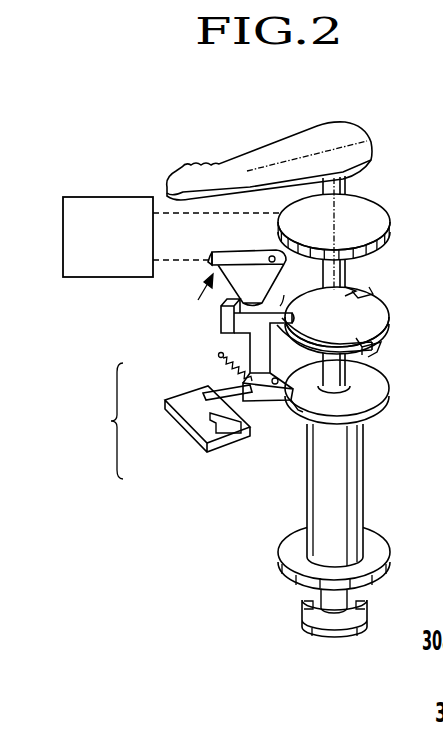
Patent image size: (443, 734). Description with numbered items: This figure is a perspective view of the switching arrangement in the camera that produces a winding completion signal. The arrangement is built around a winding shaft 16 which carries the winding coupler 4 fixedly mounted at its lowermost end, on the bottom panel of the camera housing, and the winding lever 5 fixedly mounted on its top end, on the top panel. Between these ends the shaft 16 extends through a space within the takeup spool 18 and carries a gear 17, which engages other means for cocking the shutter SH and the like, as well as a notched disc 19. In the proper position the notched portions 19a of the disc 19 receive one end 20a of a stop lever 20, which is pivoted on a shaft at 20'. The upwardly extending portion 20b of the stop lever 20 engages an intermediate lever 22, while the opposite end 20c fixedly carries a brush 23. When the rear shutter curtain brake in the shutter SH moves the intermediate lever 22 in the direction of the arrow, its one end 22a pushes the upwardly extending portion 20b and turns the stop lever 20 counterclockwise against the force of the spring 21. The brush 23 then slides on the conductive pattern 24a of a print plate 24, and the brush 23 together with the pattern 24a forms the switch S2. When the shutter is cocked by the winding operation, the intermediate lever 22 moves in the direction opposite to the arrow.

The winding lever 5 is at (265, 166).
The shutter SH is at (104, 197).
The gear 17 is at (375, 231).
The winding shaft 16 is at (357, 291).
The notched disc 19 is at (378, 328).
The notched portions 19a is at (372, 358).
The spring 21 is at (282, 337).
The intermediate lever 22 is at (230, 256).
The one end of intermediate lever 22a is at (211, 262).
The one end of stop lever 20a is at (284, 300).
The stop lever 20 is at (220, 343).
The upwardly extending portion 20b is at (222, 318).
The opposite end of stop lever 20c is at (266, 401).
The pivot of stop lever 20' is at (283, 444).
The brush 23 is at (224, 384).
The print plate 24 is at (200, 418).
The conductive pattern 24a is at (228, 424).
The switch S2 is at (109, 421).
The takeup spool 18 is at (347, 478).
The winding coupler 4 is at (335, 631).